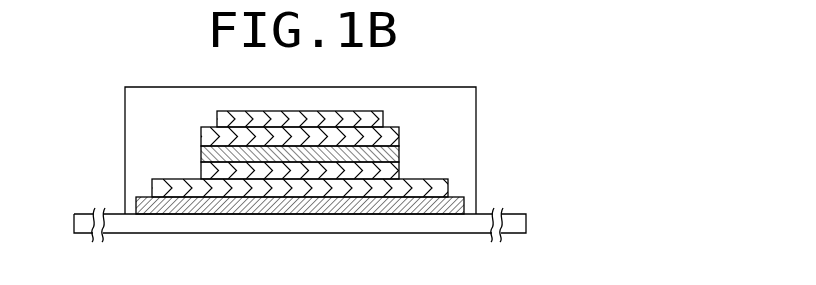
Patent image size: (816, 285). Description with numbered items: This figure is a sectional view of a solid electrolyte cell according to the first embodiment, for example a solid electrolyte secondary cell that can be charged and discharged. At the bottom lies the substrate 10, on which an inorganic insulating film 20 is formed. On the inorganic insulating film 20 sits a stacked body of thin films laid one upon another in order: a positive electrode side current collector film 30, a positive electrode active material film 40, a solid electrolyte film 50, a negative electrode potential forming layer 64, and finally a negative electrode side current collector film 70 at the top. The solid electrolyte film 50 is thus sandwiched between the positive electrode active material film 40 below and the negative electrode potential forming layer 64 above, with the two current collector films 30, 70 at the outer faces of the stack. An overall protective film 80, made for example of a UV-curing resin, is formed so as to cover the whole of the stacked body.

The substrate 10 is at (390, 224).
The inorganic insulating film 20 is at (430, 205).
The positive electrode side current collector film 30 is at (436, 189).
The positive electrode active material film 40 is at (383, 171).
The solid electrolyte film 50 is at (383, 153).
The negative electrode potential forming layer 64 is at (383, 137).
The negative electrode side current collector film 70 is at (370, 120).
The overall protective film 80 is at (459, 98).